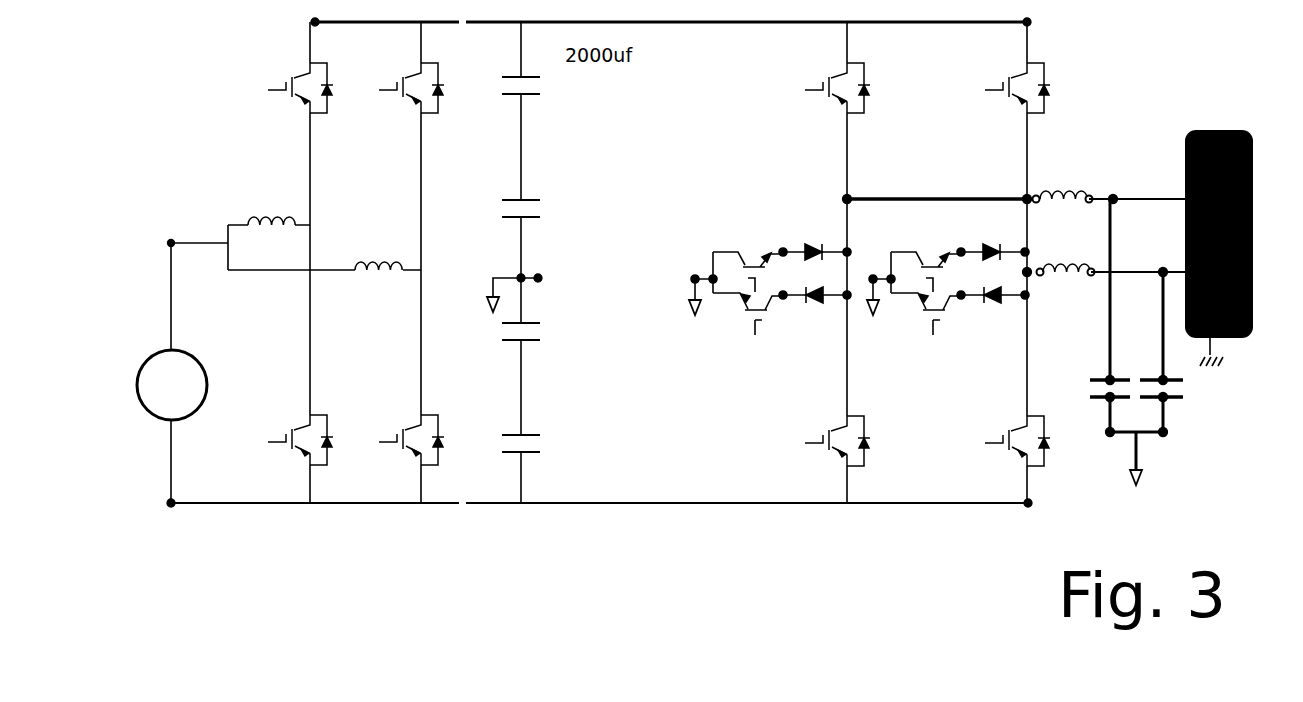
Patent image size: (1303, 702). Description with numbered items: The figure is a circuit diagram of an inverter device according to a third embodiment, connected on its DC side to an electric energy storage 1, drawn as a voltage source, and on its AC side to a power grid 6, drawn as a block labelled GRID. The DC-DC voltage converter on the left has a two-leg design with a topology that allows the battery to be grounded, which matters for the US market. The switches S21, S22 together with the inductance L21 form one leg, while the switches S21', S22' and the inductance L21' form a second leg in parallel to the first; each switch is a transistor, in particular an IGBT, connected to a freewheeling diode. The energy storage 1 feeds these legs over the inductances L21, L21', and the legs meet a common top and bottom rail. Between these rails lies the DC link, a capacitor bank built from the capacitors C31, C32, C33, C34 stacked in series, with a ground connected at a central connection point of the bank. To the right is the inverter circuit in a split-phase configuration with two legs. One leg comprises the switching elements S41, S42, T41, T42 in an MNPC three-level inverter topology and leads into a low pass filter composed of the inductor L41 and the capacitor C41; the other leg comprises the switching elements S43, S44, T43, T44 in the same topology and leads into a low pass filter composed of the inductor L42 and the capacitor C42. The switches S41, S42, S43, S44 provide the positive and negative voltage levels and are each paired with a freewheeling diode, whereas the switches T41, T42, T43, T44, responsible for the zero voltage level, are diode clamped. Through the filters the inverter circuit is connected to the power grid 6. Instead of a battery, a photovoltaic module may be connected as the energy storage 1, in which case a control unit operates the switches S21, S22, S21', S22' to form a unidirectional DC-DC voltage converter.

The electric energy storage 1 is at (143, 366).
The power grid 6 is at (1243, 130).
The switching element S21 is at (295, 83).
The switching element S21' is at (407, 259).
The switching element S22 is at (289, 421).
The inductance L21 is at (269, 203).
The inductance L21' is at (324, 249).
The capacitor C31 is at (544, 89).
The capacitor C32 is at (544, 337).
The capacitor C33 is at (544, 213).
The capacitor C34 is at (544, 448).
The switching element S41 is at (829, 83).
The switching element S42 is at (829, 436).
The switching element S43 is at (1011, 83).
The switching element S44 is at (1010, 436).
The switching element T41 is at (782, 257).
The switching element T42 is at (782, 314).
The switching element T43 is at (958, 257).
The switching element T44 is at (960, 314).
The inductor L41 is at (1077, 180).
The inductor L42 is at (1066, 284).
The capacitor C41 is at (1094, 315).
The capacitor C42 is at (1178, 352).